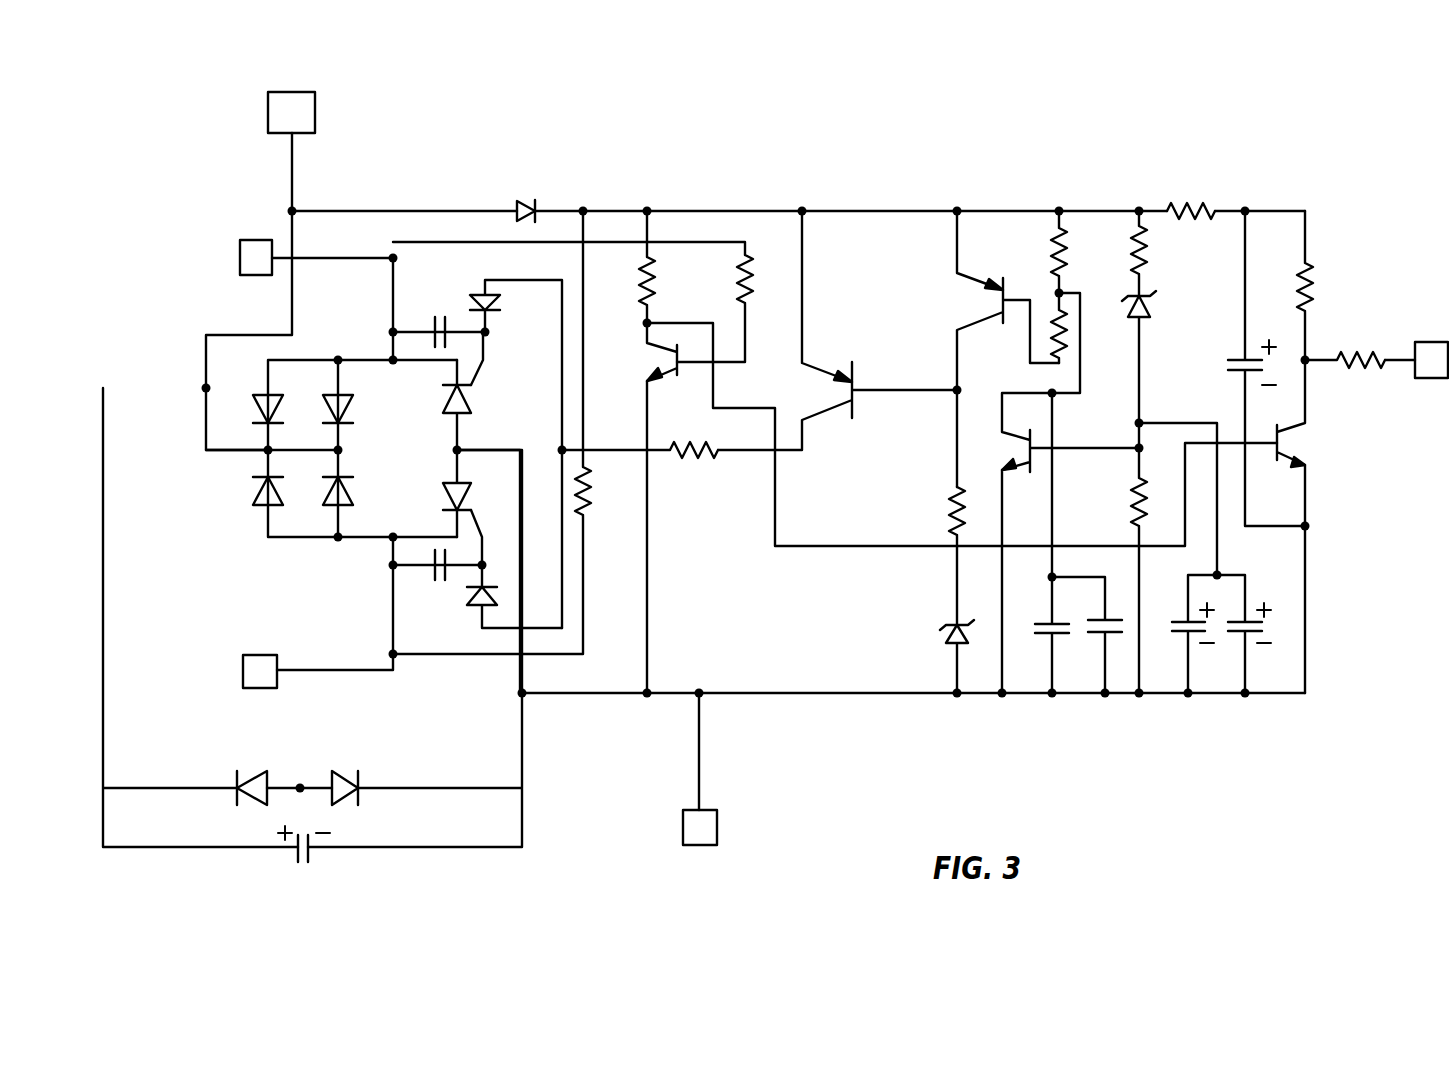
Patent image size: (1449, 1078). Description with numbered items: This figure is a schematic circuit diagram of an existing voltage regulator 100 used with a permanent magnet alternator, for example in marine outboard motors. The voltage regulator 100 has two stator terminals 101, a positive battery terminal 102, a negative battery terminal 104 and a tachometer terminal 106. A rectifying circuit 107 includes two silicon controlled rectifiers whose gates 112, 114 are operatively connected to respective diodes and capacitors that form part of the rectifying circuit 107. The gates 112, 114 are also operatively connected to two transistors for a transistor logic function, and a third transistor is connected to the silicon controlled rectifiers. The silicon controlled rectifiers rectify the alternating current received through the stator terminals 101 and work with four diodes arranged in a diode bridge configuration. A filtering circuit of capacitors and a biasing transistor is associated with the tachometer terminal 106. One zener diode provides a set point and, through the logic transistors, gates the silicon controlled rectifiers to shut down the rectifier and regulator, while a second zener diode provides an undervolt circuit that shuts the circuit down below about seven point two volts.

The voltage regulator 100 is at (820, 165).
The stator terminals 101 is at (252, 250).
The B+ terminal 102 is at (303, 104).
The B– terminal 104 is at (699, 845).
The tachometer terminal 106 is at (1433, 340).
The rectifying circuit 107 is at (260, 561).
The gate of SCR1 112 is at (474, 365).
The gate of SCR2 114 is at (453, 513).